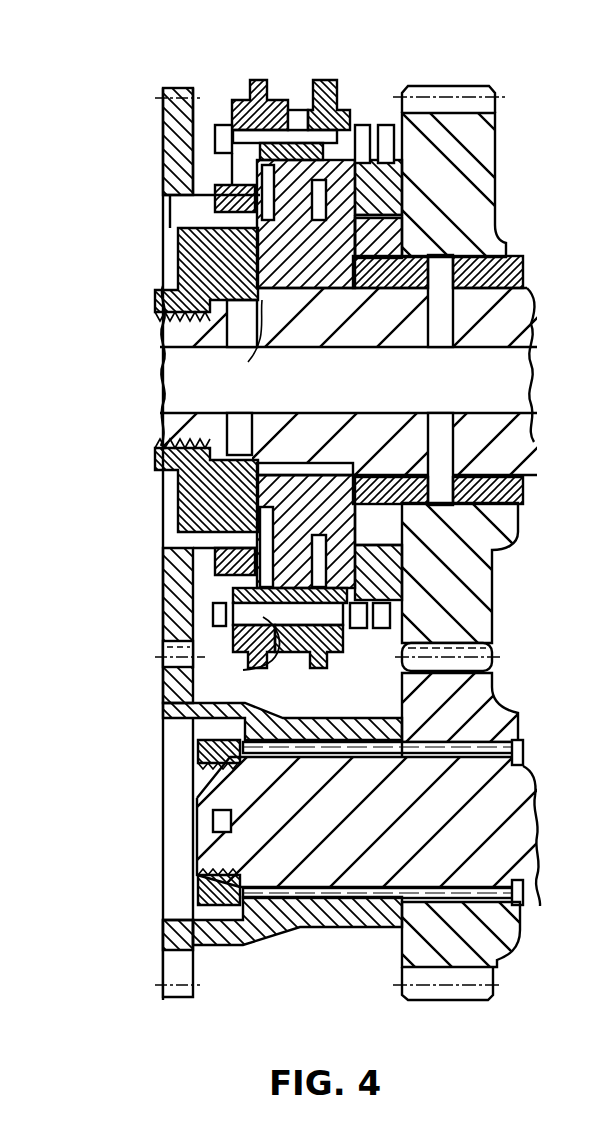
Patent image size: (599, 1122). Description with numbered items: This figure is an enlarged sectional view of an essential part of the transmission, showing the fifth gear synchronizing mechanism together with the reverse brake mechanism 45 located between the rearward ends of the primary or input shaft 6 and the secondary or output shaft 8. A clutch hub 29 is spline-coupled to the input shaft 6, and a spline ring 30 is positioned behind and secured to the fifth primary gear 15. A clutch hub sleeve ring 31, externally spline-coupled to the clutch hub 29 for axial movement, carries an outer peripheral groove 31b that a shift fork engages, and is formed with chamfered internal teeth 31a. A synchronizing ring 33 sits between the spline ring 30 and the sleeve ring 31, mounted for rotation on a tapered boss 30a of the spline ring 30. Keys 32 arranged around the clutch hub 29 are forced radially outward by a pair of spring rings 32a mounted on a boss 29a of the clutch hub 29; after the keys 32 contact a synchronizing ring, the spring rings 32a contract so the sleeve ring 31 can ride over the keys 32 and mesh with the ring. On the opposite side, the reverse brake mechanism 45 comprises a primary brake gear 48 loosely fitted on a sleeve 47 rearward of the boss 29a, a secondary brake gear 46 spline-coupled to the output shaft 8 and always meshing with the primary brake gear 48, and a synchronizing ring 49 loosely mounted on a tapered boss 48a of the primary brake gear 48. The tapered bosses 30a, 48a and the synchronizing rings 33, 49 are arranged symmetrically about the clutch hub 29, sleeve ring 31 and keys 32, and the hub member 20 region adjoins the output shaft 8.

The primary or input shaft 6 is at (536, 308).
The secondary or output shaft 8 is at (540, 775).
The fifth primary gear 15 is at (497, 150).
The hub member 20 is at (500, 686).
The clutch hub 29 is at (298, 185).
The boss 29a is at (286, 265).
The spline ring 30 is at (386, 125).
The tapered boss 30a is at (345, 265).
The clutch hub sleeve ring 31 is at (246, 80).
The internal teeth 31a is at (283, 640).
The outer peripheral groove 31b is at (240, 655).
The keys 32 is at (295, 110).
The spring rings 32a is at (320, 250).
The synchronizing ring 33 is at (362, 125).
The reverse brake mechanism 45 is at (126, 656).
The secondary brake gear 46 is at (163, 688).
The sleeve 47 is at (178, 262).
The primary brake gear 48 is at (163, 573).
The tapered boss 48a is at (215, 195).
The synchronizing ring 49 is at (228, 128).